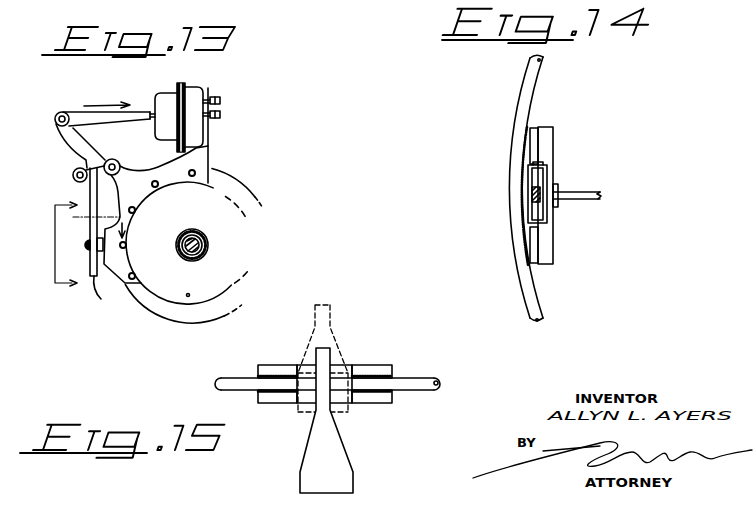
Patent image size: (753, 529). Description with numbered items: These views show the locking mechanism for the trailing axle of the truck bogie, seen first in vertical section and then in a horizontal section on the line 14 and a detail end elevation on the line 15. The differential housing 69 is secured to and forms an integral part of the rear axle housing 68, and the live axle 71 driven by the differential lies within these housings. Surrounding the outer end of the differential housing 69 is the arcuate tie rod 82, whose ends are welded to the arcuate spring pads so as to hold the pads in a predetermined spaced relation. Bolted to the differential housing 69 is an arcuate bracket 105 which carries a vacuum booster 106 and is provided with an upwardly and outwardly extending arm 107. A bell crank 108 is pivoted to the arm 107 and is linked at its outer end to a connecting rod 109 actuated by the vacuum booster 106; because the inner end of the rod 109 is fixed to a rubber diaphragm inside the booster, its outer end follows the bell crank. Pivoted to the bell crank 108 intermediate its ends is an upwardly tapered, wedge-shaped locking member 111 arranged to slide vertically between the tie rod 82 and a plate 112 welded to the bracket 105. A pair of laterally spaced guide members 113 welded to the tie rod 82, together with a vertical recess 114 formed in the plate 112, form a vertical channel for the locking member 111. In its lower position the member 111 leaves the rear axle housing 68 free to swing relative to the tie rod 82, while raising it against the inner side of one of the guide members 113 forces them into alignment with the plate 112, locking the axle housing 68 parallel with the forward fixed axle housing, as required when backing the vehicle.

In FIG. 13, the arcuate bracket 105 is at (209, 153).
In FIG. 14, the arcuate bracket 105 is at (590, 199).
In FIG. 13, the vacuum booster 106 is at (193, 90).
In FIG. 13, the arm 107 is at (123, 169).
In FIG. 13, the bell crank 108 is at (82, 148).
In FIG. 13, the connecting rod 109 is at (133, 112).
In FIG. 13, the wedge-shaped locking member 111 is at (111, 292).
In FIG. 14, the wedge-shaped locking member 111 is at (539, 172).
In FIG. 15, the wedge-shaped locking member 111 is at (343, 463).
In FIG. 14, the plate 112 is at (549, 142).
In FIG. 15, the plate 112 is at (344, 366).
In FIG. 14, the guide members 113 is at (533, 127).
In FIG. 15, the guide members 113 is at (271, 357).
In FIG. 13, the vertical recess 114 is at (94, 244).
In FIG. 14, the vertical recess 114 is at (548, 222).
In FIG. 13, the axle housing 68 is at (186, 233).
In FIG. 13, the differential housing 69 is at (177, 294).
In FIG. 13, the live axle 71 is at (206, 237).
In FIG. 13, the arcuate tie rod 82 is at (88, 248).
In FIG. 14, the arcuate tie rod 82 is at (513, 213).
In FIG. 15, the arcuate tie rod 82 is at (429, 389).
In FIG. 13, the section line 14- 14 is at (100, 224).
In FIG. 13, the section line 15- 15 is at (67, 244).